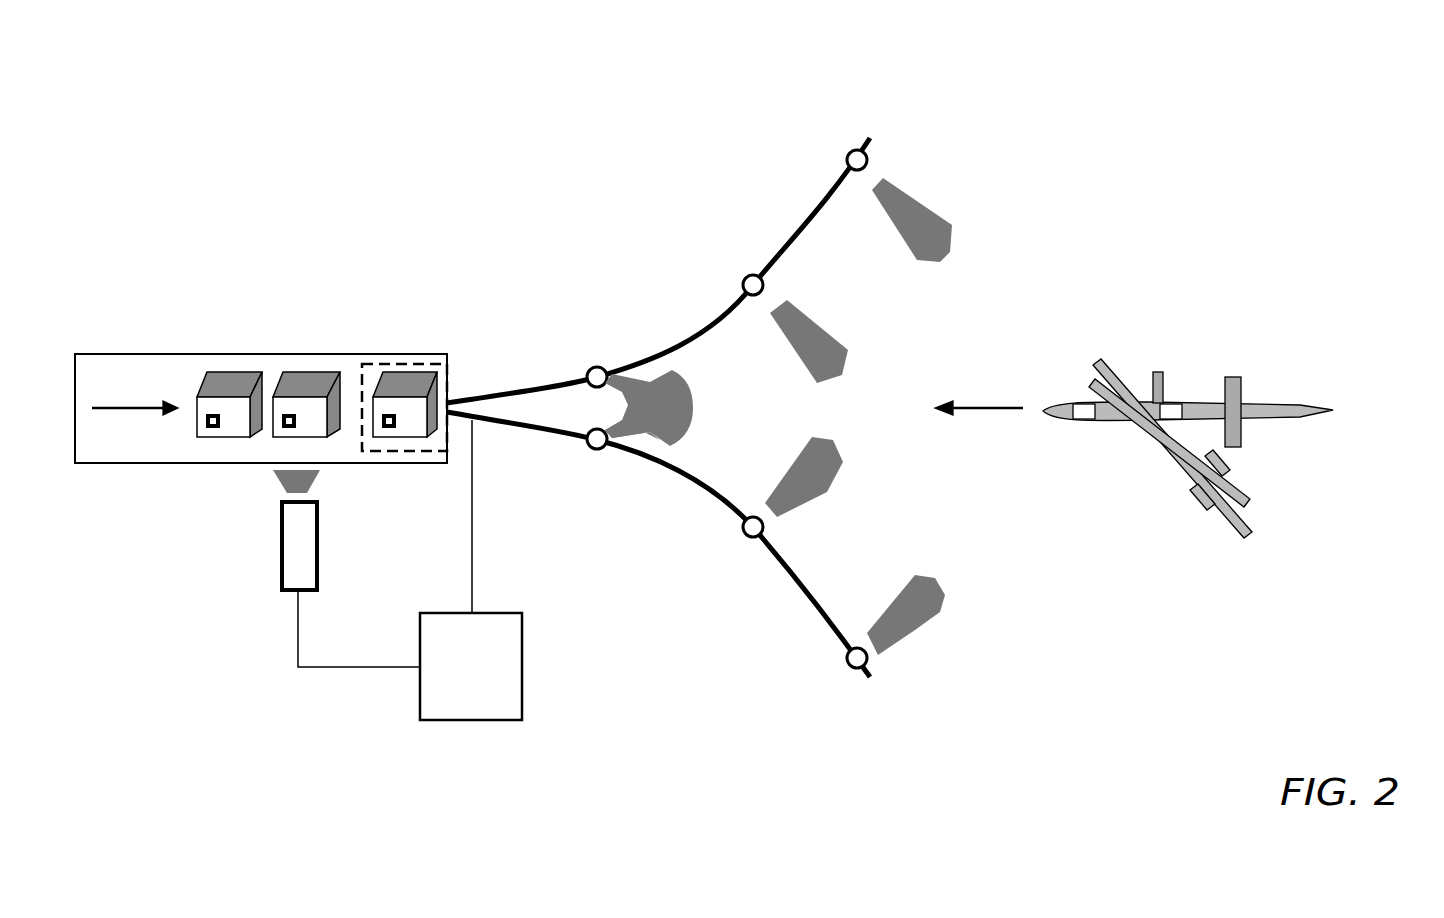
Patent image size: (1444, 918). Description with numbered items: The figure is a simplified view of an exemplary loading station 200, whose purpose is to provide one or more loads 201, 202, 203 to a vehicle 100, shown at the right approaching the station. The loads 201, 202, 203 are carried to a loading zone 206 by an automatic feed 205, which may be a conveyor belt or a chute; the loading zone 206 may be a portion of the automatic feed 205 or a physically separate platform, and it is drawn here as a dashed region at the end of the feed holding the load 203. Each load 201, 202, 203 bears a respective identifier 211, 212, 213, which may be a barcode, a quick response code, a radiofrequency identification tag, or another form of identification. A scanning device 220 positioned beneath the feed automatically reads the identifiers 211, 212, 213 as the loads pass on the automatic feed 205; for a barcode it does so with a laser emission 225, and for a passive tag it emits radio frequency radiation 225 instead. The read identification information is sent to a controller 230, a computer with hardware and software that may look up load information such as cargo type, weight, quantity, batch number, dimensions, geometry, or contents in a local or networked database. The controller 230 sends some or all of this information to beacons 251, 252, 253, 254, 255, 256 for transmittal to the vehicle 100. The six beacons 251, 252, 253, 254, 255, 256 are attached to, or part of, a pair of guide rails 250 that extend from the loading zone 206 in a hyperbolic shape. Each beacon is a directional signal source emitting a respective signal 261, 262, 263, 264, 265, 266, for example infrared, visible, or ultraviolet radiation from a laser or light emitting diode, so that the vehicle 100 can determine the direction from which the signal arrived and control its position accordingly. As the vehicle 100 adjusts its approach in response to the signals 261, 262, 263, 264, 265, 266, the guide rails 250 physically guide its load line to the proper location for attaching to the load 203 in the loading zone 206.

The vehicle 100 is at (1243, 547).
The loading station 200 is at (309, 97).
The load 201 is at (218, 372).
The load 202 is at (302, 372).
The load 203 is at (393, 372).
The automatic feed 205 is at (92, 465).
The loading zone 206 is at (412, 451).
The identifier 211 is at (207, 415).
The identifier 212 is at (287, 415).
The identifier 213 is at (387, 415).
The scanning device 220 is at (278, 590).
The laser emission 225 is at (280, 493).
The controller 230 is at (483, 720).
The guide rails 250 is at (550, 382).
The beacon 251 is at (595, 452).
The beacon 252 is at (597, 365).
The beacon 253 is at (745, 540).
The beacon 254 is at (748, 273).
The beacon 255 is at (853, 670).
The beacon 256 is at (848, 148).
The signal 261 is at (632, 450).
The signal 262 is at (625, 375).
The signal 263 is at (810, 498).
The signal 264 is at (817, 317).
The signal 265 is at (912, 637).
The signal 266 is at (927, 198).